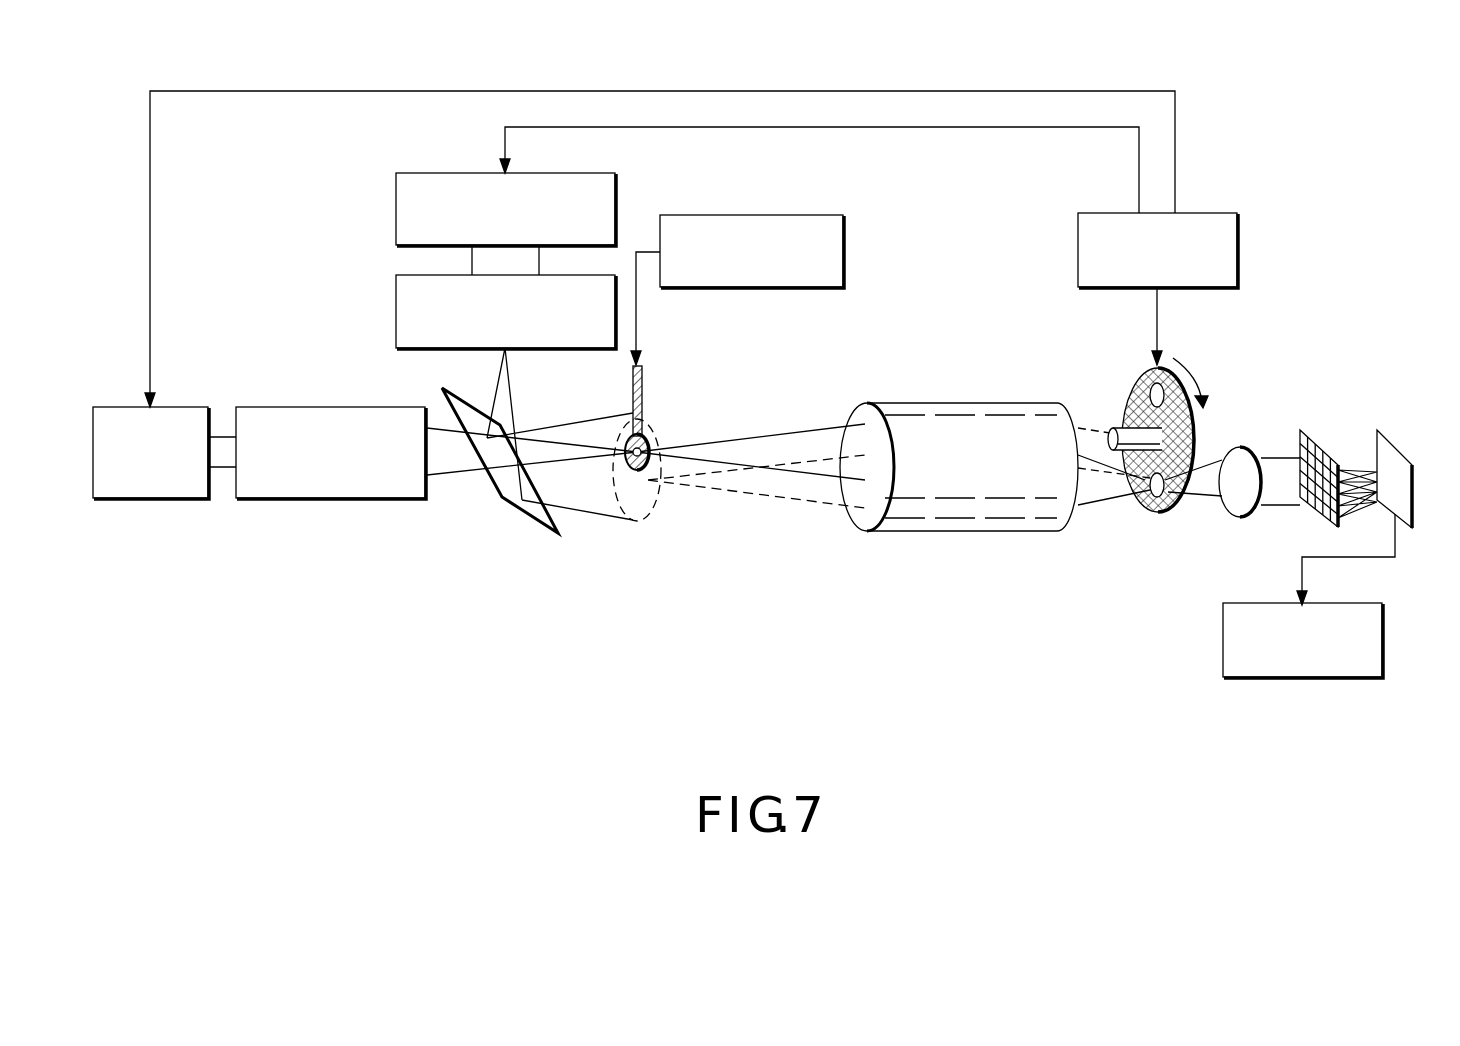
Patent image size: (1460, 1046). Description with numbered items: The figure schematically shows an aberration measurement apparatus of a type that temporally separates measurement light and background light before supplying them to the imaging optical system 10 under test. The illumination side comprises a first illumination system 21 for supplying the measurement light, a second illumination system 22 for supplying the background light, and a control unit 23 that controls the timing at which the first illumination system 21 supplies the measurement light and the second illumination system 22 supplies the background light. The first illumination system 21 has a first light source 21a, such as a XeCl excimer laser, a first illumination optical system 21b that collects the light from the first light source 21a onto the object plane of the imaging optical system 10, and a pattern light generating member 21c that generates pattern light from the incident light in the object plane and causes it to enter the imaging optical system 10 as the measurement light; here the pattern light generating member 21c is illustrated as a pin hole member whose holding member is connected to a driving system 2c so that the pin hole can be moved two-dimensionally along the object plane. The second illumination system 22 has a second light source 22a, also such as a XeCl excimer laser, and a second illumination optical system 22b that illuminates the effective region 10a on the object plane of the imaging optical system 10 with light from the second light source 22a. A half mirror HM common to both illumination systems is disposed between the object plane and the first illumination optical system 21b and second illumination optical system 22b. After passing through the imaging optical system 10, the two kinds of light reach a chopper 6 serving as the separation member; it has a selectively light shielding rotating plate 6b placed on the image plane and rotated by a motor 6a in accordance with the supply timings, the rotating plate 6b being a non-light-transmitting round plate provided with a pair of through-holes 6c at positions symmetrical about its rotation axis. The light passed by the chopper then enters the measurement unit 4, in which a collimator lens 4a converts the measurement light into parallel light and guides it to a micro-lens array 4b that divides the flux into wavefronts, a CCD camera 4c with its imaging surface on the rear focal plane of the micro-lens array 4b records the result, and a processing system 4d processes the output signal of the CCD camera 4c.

The first illumination system 21 is at (340, 558).
The first light source 21a is at (177, 498).
The first illumination optical system 21b is at (318, 498).
The pattern light generating member 21c is at (650, 380).
The second illumination system 22 is at (327, 180).
The second light source 22a is at (396, 208).
The second illumination optical system 22b is at (396, 311).
The driving system 2c is at (843, 252).
The control unit 23 is at (1237, 252).
The half mirror HM is at (510, 503).
The imaging optical system 10 is at (988, 403).
The effective region 10a is at (640, 521).
The chopper 6 is at (1148, 446).
The motor 6a is at (1110, 436).
The rotating plate 6b is at (1180, 503).
The through-holes 6c is at (1150, 390).
The measurement unit 4 is at (1445, 386).
The collimator lens 4a is at (1240, 446).
The micro-lens array 4b is at (1320, 450).
The CCD camera 4c is at (1392, 445).
The processing system 4d is at (1383, 628).